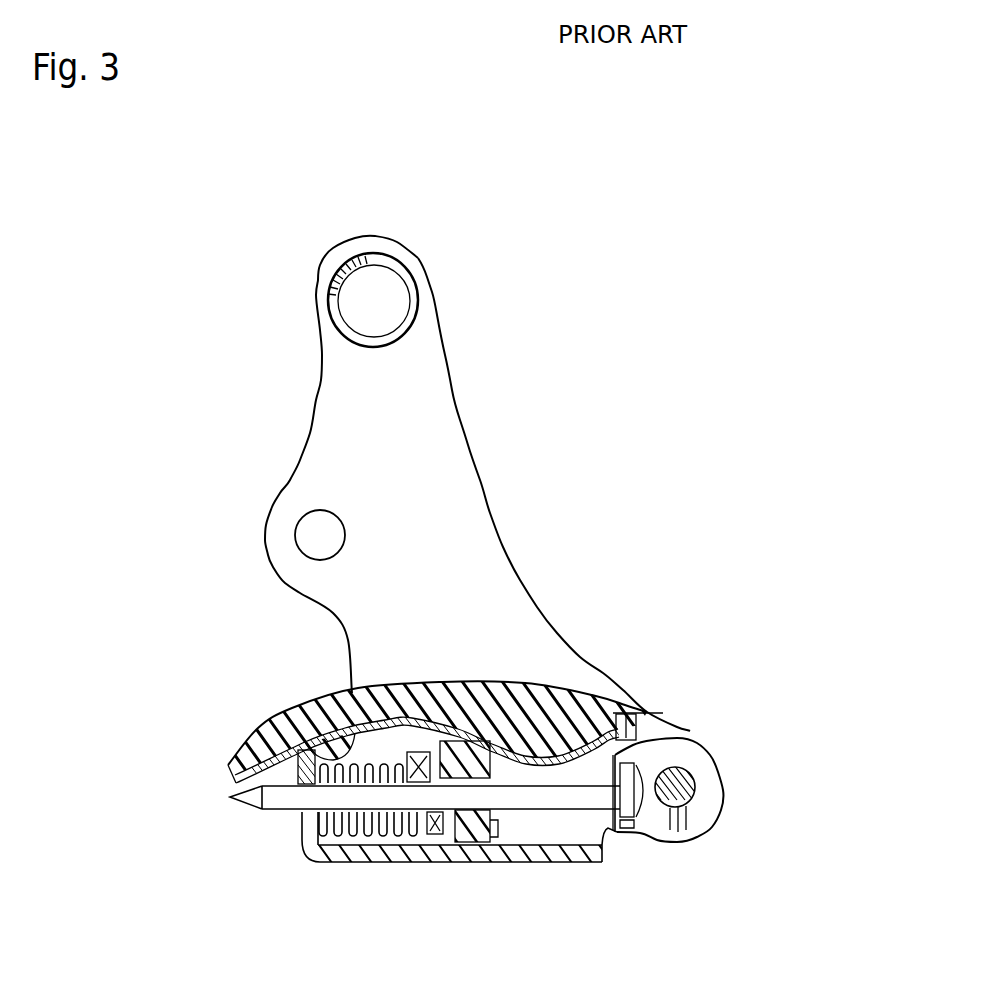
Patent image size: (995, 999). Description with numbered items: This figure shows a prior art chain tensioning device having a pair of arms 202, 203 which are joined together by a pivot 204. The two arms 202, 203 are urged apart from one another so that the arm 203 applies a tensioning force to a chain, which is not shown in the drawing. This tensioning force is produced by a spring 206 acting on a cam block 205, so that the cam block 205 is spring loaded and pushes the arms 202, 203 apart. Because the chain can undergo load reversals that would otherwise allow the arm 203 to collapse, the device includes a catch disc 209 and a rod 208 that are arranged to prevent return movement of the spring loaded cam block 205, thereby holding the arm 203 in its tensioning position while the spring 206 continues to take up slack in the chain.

The arm 202 is at (567, 863).
The arm 203 is at (680, 723).
The pivot 204 is at (683, 790).
The cam block 205 is at (373, 737).
The spring 206 is at (320, 822).
The rod 208 is at (283, 795).
The catch disc 209 is at (440, 815).